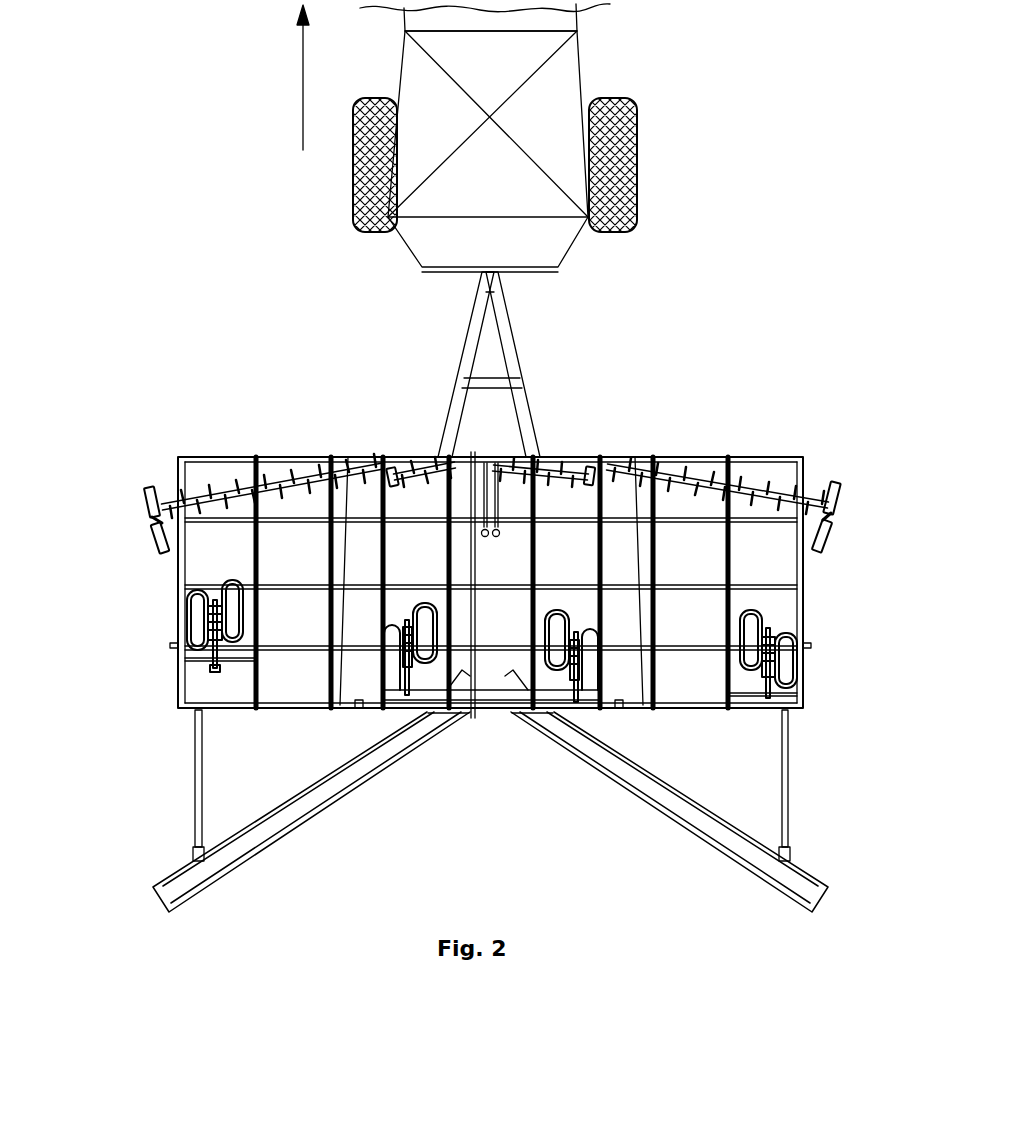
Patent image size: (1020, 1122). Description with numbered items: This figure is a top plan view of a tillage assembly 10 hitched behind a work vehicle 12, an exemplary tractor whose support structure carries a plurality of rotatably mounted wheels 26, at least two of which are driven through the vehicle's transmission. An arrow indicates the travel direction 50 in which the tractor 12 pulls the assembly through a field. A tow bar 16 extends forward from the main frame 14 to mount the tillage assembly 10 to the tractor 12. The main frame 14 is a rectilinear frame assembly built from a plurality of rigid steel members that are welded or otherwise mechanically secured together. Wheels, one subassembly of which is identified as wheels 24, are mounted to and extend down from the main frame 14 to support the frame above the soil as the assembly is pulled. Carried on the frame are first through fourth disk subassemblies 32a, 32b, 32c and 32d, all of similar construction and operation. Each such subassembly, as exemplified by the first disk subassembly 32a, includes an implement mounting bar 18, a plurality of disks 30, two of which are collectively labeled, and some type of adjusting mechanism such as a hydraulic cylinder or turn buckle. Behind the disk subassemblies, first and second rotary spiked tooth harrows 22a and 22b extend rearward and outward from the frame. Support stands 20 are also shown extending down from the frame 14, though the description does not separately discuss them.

The tillage assembly 10 is at (282, 320).
The work vehicle 12 is at (444, 138).
The main frame 14 is at (180, 695).
The tow bar 16 is at (532, 350).
The implement mounting bar 18 is at (222, 490).
The stand 20 is at (195, 830).
The first rotary spiked tooth harrow 22a is at (392, 760).
The second rotary spiked tooth harrow 22b is at (630, 780).
The wheels 24 is at (200, 620).
The wheels 26 is at (356, 206).
The disks 30 is at (322, 462).
The first disk subassembly 32a is at (221, 459).
The second disk subassembly 32b is at (420, 436).
The third disk subassembly 32c is at (570, 440).
The fourth disk subassembly 32d is at (688, 444).
The travel direction 50 is at (286, 77).